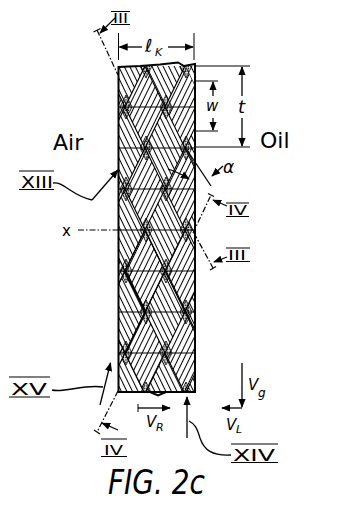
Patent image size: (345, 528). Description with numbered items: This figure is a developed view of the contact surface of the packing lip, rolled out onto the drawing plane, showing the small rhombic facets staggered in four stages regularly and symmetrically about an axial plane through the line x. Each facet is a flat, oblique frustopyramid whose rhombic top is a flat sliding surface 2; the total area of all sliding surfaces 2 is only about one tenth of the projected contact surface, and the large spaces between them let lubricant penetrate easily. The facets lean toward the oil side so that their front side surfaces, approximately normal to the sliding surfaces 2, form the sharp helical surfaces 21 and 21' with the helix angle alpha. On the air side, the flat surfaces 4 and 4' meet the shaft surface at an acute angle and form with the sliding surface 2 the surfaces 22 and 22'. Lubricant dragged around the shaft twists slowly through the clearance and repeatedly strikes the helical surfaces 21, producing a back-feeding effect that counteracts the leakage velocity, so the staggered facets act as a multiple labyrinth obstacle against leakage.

The sliding surface 2 is at (195, 313).
The flat surface 4 is at (121, 271).
The flat surface 4' is at (96, 312).
The helical surface 21 is at (203, 291).
The helical surface 21' is at (211, 325).
The surface 22 is at (89, 291).
The surface 22' is at (104, 329).